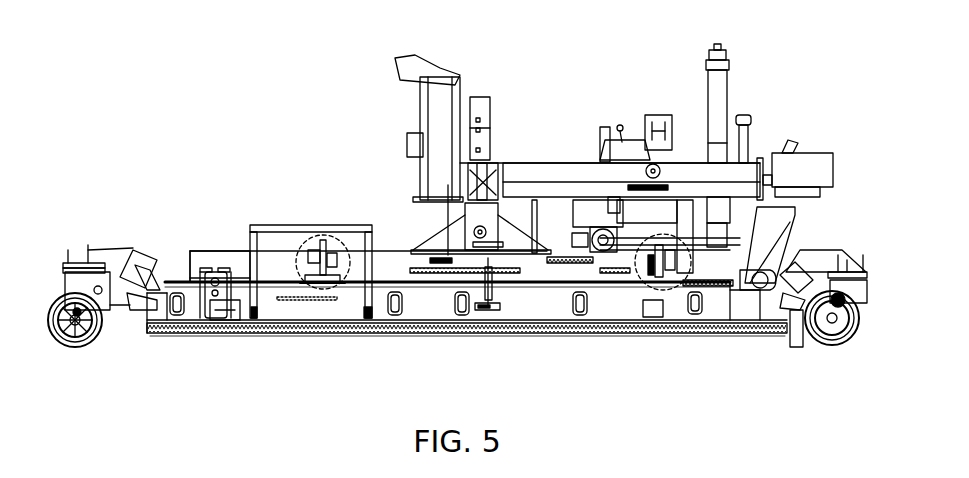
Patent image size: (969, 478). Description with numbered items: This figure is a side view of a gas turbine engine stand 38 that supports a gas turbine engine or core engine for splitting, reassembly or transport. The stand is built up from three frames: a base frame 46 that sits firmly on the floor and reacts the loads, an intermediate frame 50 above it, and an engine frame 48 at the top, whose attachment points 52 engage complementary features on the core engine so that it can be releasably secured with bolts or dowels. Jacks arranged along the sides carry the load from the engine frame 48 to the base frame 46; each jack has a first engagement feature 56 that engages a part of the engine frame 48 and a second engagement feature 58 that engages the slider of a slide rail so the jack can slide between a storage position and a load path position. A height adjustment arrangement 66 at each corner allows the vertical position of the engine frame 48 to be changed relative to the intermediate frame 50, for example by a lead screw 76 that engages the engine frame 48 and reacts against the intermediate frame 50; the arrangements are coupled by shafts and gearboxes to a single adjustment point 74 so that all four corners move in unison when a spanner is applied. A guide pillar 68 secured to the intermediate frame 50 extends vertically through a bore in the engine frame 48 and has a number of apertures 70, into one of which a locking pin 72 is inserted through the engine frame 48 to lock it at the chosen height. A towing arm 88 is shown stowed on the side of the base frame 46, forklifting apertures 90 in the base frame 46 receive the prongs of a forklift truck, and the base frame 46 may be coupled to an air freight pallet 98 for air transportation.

The gas turbine engine stand 38 is at (457, 202).
The base frame 46 is at (420, 330).
The engine frame 48 is at (545, 187).
The intermediate frame 50 is at (230, 255).
The attachment point 52 is at (422, 62).
The first engagement feature 56 is at (320, 250).
The second engagement feature 58 is at (317, 278).
The height adjustment arrangement 66 is at (760, 94).
The guide pillar 68 is at (483, 120).
The aperture 70 is at (483, 150).
The locking pin 72 is at (508, 157).
The adjustment point 74 is at (595, 255).
The lead screw 76 is at (747, 137).
The towing arm 88 is at (500, 277).
The forklifting aperture 90 is at (320, 333).
The air freight pallet 98 is at (200, 333).